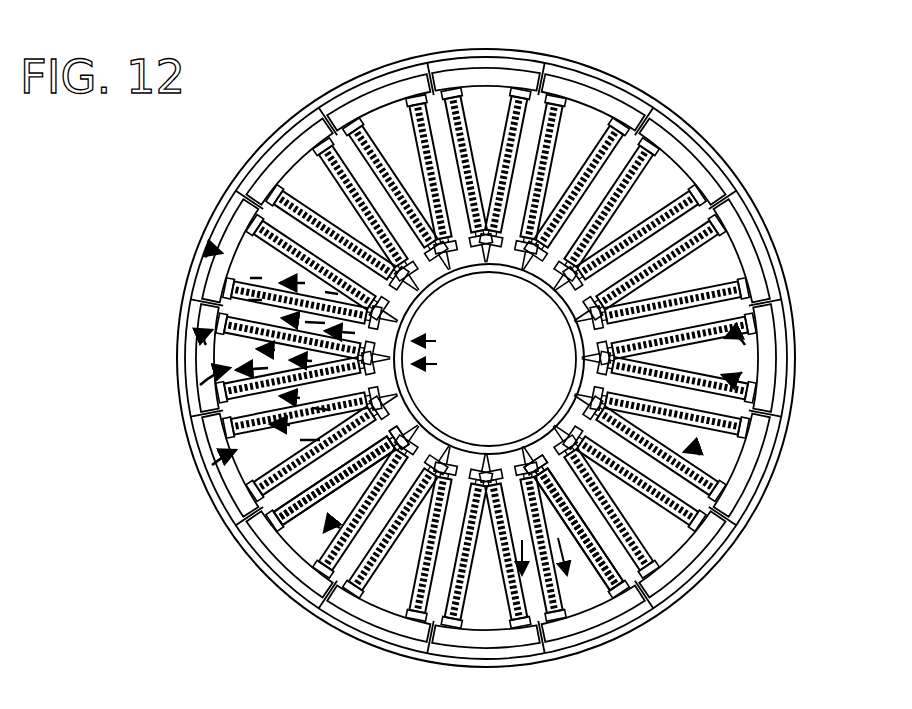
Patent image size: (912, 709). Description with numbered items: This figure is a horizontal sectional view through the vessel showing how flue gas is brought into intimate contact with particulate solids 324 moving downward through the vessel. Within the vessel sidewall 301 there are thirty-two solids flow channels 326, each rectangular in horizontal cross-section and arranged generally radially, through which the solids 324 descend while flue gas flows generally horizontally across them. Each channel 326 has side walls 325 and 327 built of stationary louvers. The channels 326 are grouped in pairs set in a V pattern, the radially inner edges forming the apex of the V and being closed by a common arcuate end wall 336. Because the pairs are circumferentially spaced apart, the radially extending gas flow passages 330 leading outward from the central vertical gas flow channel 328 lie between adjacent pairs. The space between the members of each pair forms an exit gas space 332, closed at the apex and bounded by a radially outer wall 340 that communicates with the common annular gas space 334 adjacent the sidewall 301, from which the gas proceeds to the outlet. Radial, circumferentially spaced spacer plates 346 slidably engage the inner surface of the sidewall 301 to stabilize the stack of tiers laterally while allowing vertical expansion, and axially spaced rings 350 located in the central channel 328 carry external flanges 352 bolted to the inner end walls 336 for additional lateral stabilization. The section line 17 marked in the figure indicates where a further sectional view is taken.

The vessel sidewall 301 is at (198, 273).
The particulate solids 324 is at (222, 311).
The side wall 325 is at (728, 490).
The solids flow channels 326 is at (240, 378).
The side wall 327 is at (705, 510).
The central vertical gas flow channel 328 is at (489, 359).
The radially extending gas flow passages 330 is at (537, 137).
The gas spaces 332 is at (318, 182).
The annular gas space 334 is at (255, 520).
The common arcuate end wall 336 is at (600, 350).
The radially outer wall 340 is at (302, 162).
The spacer plates 346 is at (572, 78).
The rings 350 is at (400, 420).
The external flanges 352 is at (463, 453).
The section line 17 is at (552, 570).